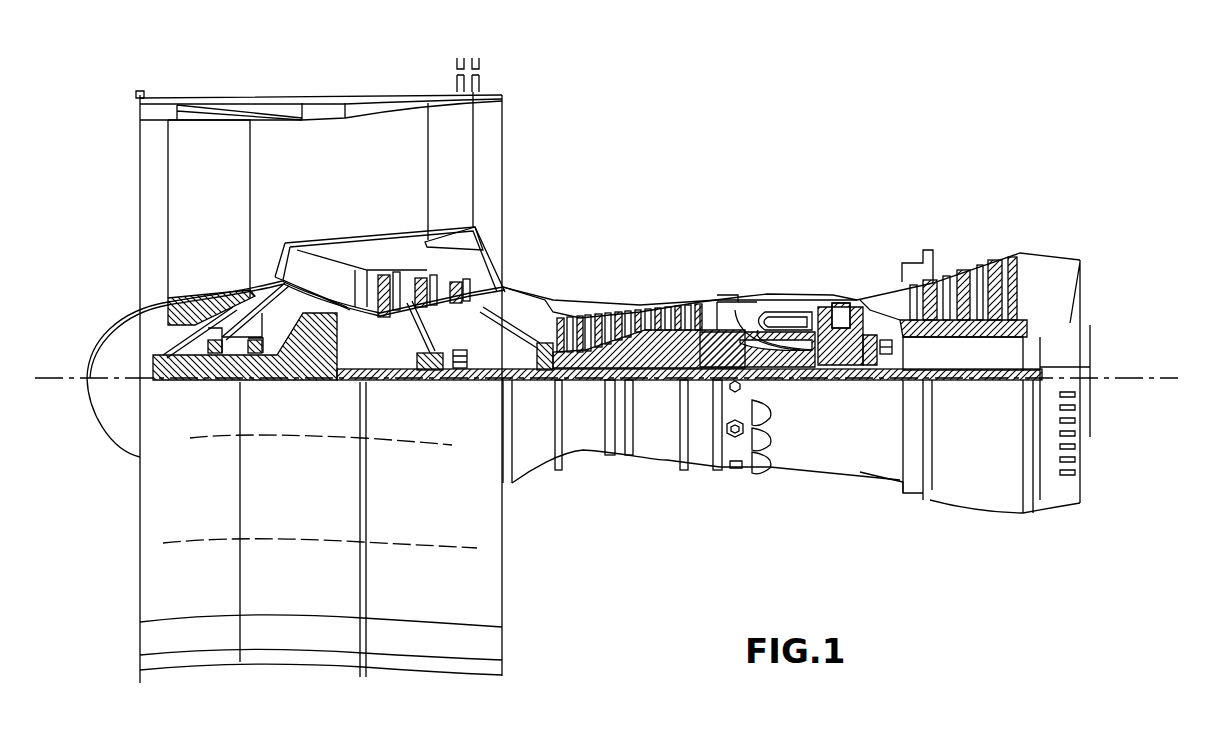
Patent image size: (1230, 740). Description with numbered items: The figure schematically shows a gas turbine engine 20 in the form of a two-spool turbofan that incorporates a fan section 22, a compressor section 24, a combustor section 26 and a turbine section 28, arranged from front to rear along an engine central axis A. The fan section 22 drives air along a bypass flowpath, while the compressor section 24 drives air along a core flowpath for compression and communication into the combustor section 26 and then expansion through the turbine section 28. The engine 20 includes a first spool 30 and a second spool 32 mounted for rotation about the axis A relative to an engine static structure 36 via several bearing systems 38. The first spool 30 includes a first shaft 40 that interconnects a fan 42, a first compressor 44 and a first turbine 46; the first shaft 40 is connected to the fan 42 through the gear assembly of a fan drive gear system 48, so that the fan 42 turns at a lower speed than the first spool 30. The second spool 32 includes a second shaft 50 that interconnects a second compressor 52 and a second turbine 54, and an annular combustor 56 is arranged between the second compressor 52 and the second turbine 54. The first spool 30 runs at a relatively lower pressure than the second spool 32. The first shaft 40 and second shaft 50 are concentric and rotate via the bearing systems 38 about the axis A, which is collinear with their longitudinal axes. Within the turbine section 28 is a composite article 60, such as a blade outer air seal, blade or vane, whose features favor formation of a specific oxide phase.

The gas turbine engine 20 is at (782, 144).
The fan section 22 is at (250, 86).
The compressor section 24 is at (556, 282).
The combustor section 26 is at (778, 271).
The turbine section 28 is at (925, 234).
The first spool 30 is at (660, 390).
The second spool 32 is at (703, 347).
The engine static structure 36 is at (700, 475).
The bearing systems 38 is at (453, 362).
The first shaft 40 is at (520, 380).
The fan 42 is at (223, 229).
The first compressor 44 is at (423, 293).
The first turbine 46 is at (970, 270).
The fan drive gear system 48 is at (330, 362).
The second shaft 50 is at (785, 370).
The second compressor 52 is at (633, 348).
The second turbine 54 is at (840, 310).
The annular combustor 56 is at (777, 323).
The composite article 60 is at (942, 272).
The engine central axis A is at (1170, 378).